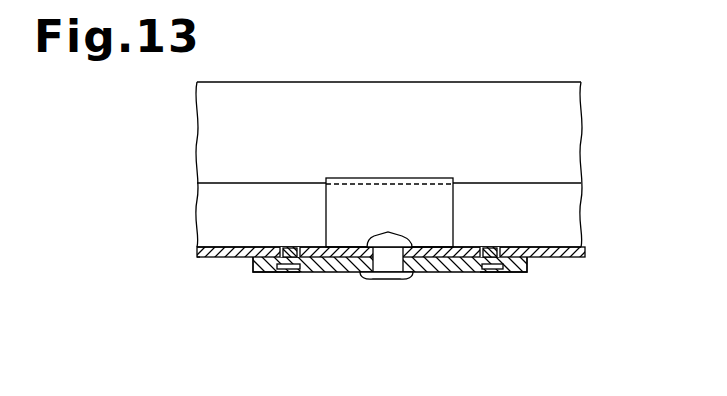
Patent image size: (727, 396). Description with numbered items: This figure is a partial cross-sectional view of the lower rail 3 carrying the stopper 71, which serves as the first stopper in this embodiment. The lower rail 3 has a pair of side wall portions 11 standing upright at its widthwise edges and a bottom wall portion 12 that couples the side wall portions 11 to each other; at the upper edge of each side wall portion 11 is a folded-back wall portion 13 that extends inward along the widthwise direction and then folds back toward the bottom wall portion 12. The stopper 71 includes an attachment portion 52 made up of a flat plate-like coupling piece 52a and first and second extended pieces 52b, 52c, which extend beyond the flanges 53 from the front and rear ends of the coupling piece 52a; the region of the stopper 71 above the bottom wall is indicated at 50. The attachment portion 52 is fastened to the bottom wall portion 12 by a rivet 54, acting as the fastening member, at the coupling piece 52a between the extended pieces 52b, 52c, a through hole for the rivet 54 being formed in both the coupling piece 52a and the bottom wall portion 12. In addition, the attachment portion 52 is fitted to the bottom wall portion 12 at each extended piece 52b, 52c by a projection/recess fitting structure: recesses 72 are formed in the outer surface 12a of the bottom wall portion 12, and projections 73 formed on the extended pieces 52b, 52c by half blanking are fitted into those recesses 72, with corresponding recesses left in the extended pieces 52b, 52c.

The lower rail 3 is at (552, 82).
The folded-back wall portion 13 is at (577, 136).
The side wall portion 11 is at (579, 212).
The bottom wall portion 12 is at (585, 252).
The outer surface 12a is at (200, 258).
The stopper 71 is at (348, 177).
The flange 53 is at (417, 190).
The mounting portion 50 is at (323, 240).
The attachment portion 52 is at (445, 273).
The coupling piece 52a is at (350, 273).
The first extended piece 52b is at (255, 273).
The second extended piece 52c is at (527, 268).
The projection 73 is at (283, 247).
The recess 72 is at (290, 269).
The rivet 54 is at (384, 283).